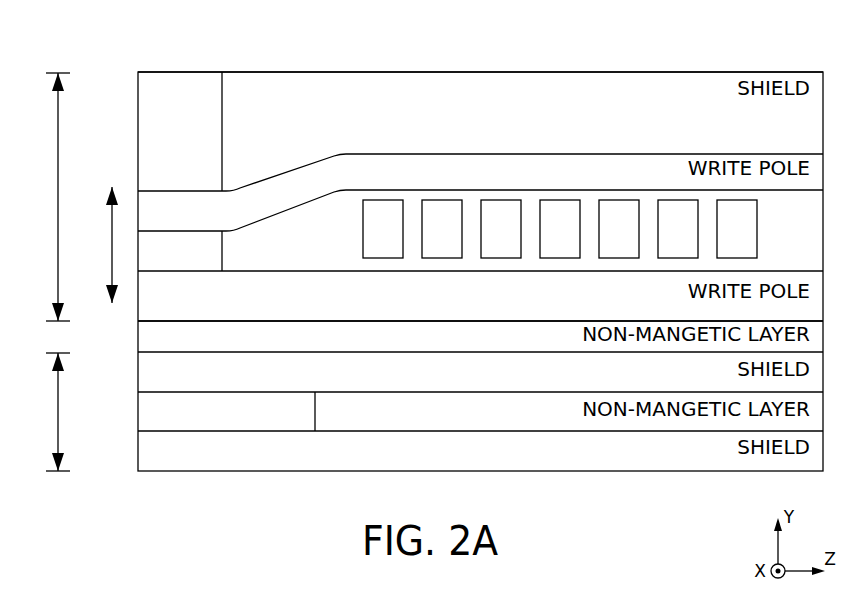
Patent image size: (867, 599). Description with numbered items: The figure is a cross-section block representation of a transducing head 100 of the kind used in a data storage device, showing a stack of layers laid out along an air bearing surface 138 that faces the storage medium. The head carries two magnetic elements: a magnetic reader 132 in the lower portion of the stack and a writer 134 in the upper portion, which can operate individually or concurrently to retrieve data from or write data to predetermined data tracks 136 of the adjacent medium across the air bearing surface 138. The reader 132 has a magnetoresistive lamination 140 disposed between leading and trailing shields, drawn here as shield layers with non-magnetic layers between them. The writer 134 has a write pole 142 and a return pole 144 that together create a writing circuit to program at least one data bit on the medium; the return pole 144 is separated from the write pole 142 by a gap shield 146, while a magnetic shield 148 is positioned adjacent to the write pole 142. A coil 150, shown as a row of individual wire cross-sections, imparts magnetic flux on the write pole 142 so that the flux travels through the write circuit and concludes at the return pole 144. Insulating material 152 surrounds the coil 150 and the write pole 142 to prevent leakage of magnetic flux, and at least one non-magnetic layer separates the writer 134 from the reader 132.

The magnetic recording head 100 is at (742, 20).
The magnetic reader 132 is at (44, 412).
The writer 134 is at (44, 197).
The data tracks 136 is at (96, 245).
The air bearing surface 138 is at (126, 75).
The magnetoresistive lamination 140 is at (480, 411).
The write pole 142 is at (480, 210).
The return pole 144 is at (480, 303).
The gap shield 146 is at (180, 251).
The magnetic shield 148 is at (480, 131).
The coil 150 is at (560, 229).
The insulating material 152 is at (522, 244).